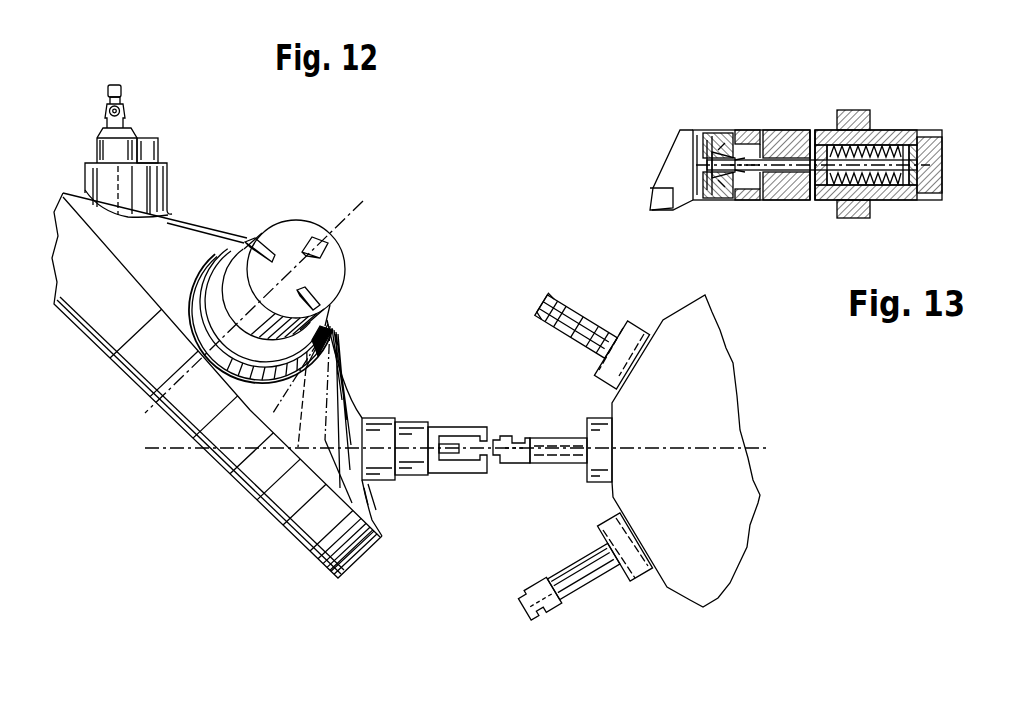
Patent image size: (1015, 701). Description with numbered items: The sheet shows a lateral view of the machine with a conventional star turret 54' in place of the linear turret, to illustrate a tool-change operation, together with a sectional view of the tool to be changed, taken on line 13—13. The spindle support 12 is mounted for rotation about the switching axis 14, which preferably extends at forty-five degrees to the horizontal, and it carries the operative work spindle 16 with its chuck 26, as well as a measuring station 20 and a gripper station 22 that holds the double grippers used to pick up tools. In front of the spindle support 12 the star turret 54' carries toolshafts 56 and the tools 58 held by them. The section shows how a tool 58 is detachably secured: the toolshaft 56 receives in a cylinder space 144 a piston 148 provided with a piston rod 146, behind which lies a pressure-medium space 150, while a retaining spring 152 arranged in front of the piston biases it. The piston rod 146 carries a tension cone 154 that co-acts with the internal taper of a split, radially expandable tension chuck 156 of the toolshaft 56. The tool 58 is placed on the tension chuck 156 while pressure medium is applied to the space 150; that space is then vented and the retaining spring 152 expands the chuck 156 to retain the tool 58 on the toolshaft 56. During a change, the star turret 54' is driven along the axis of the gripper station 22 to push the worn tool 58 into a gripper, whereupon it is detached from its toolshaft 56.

In FIG. 12, the spindle support 12 is at (192, 214).
In FIG. 12, the switching axis 14 is at (338, 208).
In FIG. 12, the work spindle 16 is at (354, 272).
In FIG. 12, the measuring station 20 is at (147, 122).
In FIG. 12, the gripper station 22 is at (468, 414).
In FIG. 12, the chuck 26 is at (260, 243).
In FIG. 12, the section line 13 is at (489, 448).
In FIG. 12, the star turret 54' is at (673, 466).
In FIG. 12, the toolshaft 56 is at (561, 462).
In FIG. 13, the toolshaft 56 is at (787, 193).
In FIG. 12, the tool 58 is at (560, 304).
In FIG. 13, the tool 58 is at (667, 157).
In FIG. 13, the cylinder space 144 is at (873, 187).
In FIG. 13, the piston rod 146 is at (772, 160).
In FIG. 13, the piston 148 is at (907, 143).
In FIG. 13, the pressure-medium space 150 is at (912, 193).
In FIG. 13, the retaining spring 152 is at (887, 143).
In FIG. 13, the tension cone 154 is at (713, 197).
In FIG. 13, the tension chuck 156 is at (712, 143).